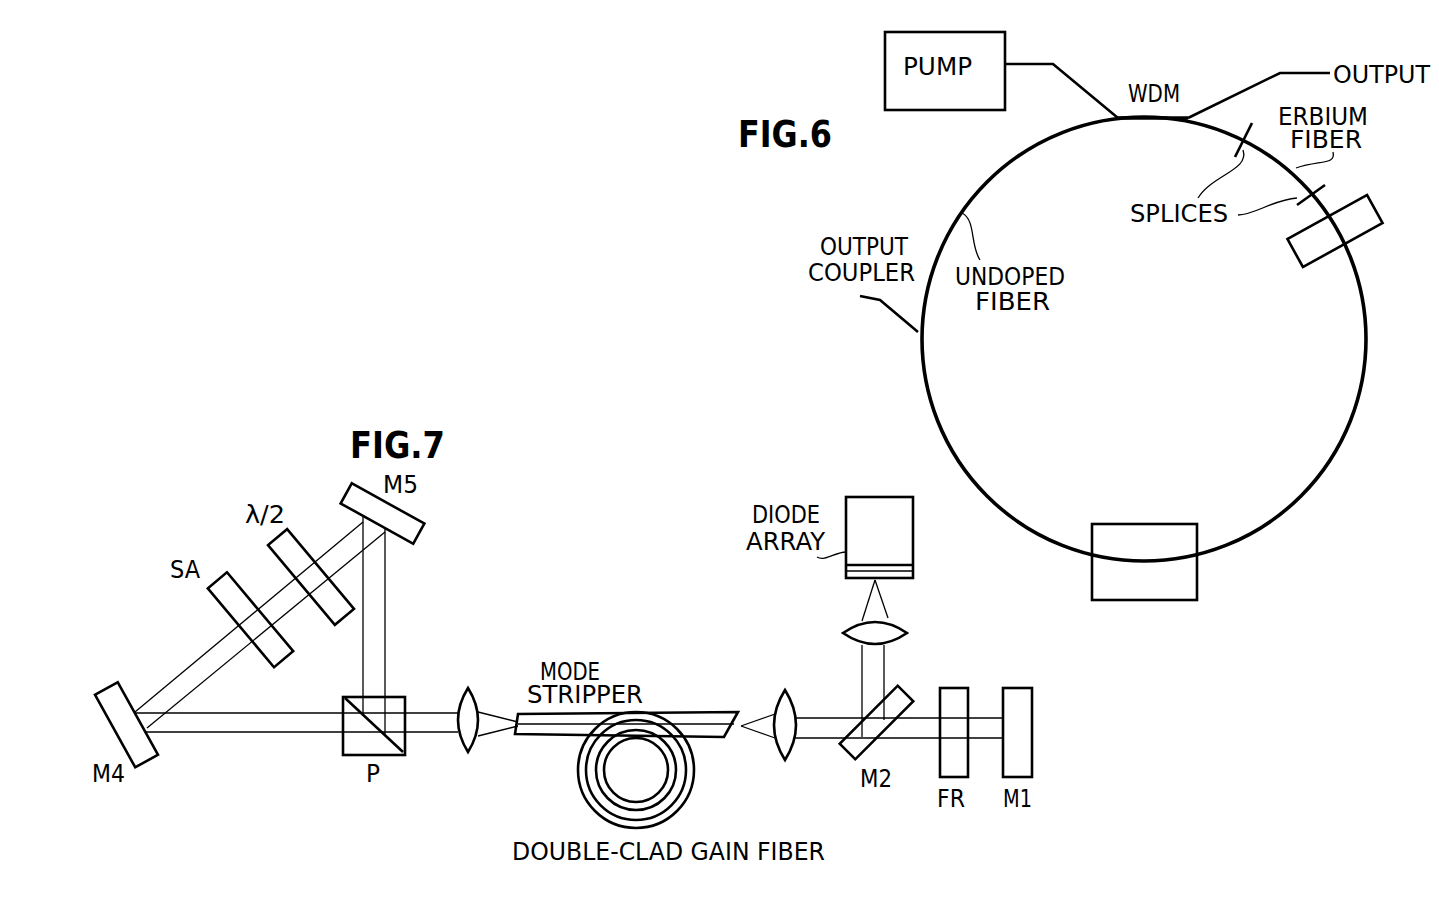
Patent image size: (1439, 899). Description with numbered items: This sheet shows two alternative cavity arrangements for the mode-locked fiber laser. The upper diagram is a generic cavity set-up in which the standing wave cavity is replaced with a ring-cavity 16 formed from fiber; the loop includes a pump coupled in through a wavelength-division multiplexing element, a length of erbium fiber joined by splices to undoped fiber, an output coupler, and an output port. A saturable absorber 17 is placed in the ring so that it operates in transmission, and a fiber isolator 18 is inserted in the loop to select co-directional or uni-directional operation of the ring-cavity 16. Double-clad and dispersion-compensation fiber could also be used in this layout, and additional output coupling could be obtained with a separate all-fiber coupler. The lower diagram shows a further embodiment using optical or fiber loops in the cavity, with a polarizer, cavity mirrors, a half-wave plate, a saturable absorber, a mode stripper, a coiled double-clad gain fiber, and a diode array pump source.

The ring-cavity 16 is at (1322, 491).
The saturable absorber 17 is at (1363, 195).
The fiber isolator 18 is at (1202, 485).